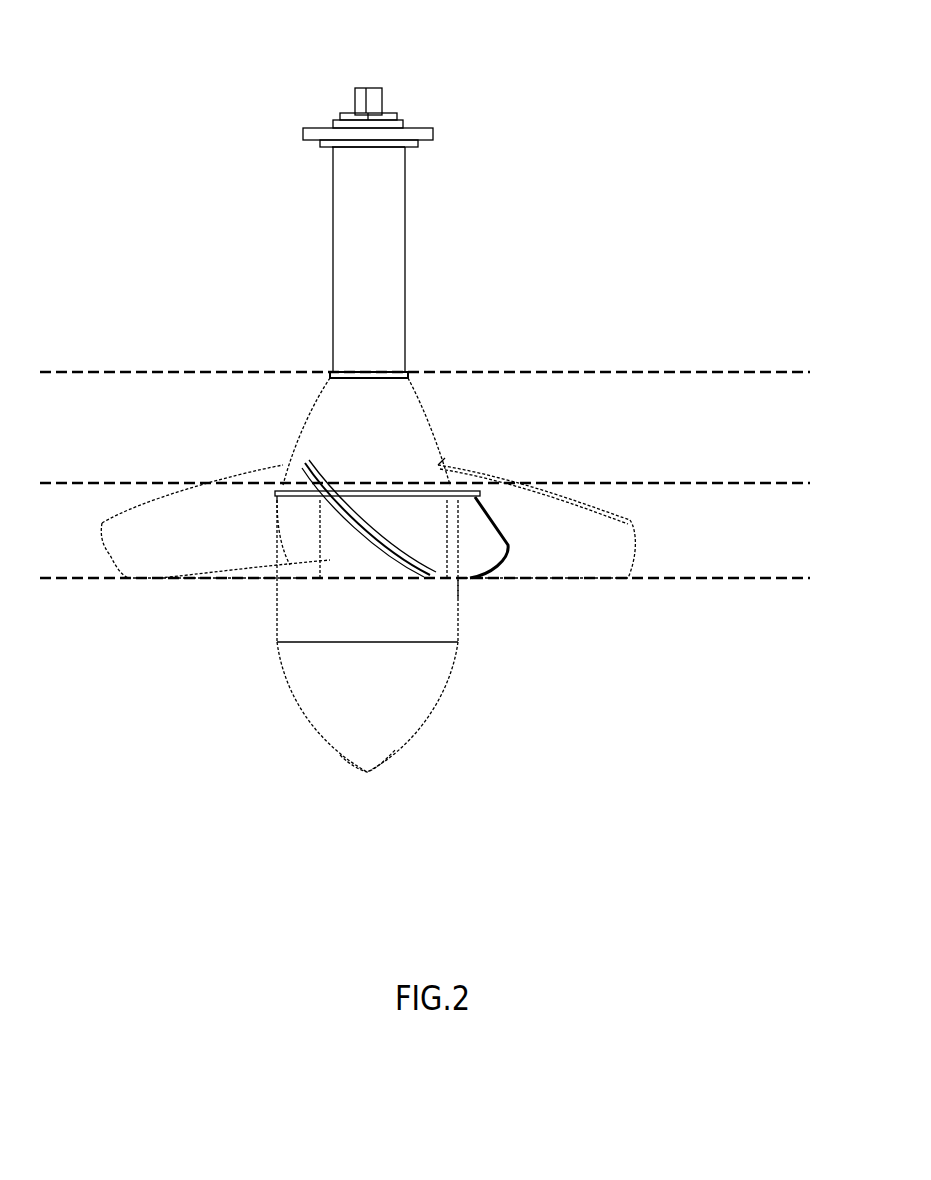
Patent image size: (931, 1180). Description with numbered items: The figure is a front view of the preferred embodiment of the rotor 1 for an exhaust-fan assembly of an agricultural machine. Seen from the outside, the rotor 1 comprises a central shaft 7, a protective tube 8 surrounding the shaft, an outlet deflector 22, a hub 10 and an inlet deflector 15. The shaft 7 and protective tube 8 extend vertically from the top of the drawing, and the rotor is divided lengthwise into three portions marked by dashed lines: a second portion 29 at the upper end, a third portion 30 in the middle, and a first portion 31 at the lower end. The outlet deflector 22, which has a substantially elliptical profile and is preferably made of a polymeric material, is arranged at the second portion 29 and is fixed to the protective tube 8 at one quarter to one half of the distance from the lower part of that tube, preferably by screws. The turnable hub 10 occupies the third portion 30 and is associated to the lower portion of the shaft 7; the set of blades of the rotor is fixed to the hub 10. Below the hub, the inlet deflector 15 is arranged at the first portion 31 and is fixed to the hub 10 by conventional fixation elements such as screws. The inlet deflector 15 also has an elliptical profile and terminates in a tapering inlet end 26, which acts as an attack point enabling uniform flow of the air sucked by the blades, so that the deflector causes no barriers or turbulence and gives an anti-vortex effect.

The rotor 1 is at (193, 63).
The shaft 7 is at (367, 80).
The protective tube 8 is at (358, 228).
The hub 10 is at (355, 556).
The inlet deflector 15 is at (413, 685).
The outlet deflector 22 is at (417, 435).
The tapering inlet end 26 is at (370, 775).
The second portion 29 is at (670, 427).
The third portion 30 is at (680, 532).
The first portion 31 is at (680, 677).